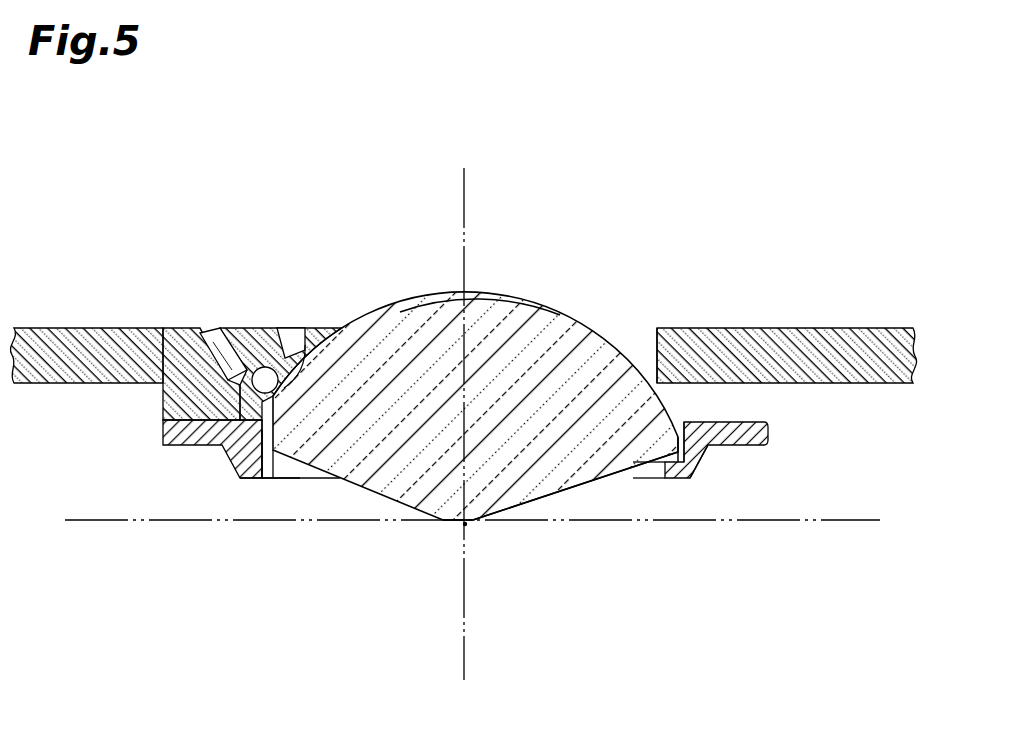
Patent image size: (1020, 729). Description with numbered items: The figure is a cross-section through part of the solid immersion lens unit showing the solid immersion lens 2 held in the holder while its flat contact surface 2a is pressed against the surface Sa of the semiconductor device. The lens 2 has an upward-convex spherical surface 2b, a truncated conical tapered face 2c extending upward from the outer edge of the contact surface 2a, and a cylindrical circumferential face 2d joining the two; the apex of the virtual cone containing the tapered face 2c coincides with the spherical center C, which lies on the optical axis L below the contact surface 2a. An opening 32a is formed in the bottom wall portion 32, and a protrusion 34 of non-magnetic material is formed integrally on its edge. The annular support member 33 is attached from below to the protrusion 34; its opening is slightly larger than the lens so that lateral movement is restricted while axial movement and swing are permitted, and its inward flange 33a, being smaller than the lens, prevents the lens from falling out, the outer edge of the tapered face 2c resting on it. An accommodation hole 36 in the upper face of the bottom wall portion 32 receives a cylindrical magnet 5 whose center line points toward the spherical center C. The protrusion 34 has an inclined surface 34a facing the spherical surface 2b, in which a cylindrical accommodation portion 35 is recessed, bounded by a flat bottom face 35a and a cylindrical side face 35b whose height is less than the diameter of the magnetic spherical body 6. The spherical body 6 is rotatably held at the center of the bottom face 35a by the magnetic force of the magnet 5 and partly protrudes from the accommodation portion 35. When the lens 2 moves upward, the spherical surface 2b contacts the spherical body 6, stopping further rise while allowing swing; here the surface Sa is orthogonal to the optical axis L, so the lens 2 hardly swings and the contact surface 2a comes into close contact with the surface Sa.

The solid immersion lens 2 is at (405, 500).
The contact surface 2a is at (473, 522).
The spherical surface 2b is at (552, 309).
The tapered face 2c is at (548, 498).
The circumferential face 2d is at (698, 455).
The magnet 5 is at (226, 350).
The spherical body 6 is at (268, 368).
The bottom wall portion 32 is at (816, 346).
The opening 32a is at (657, 352).
The support member 33 is at (770, 432).
The inward flange 33a is at (684, 479).
The protrusion 34 is at (181, 440).
The inclined surface 34a is at (265, 452).
The accommodation portion 35 is at (300, 362).
The bottom face 35a is at (236, 456).
The side face 35b is at (318, 355).
The accommodation hole 36 is at (183, 340).
The optical axis L is at (470, 197).
The surface of the semiconductor device Sa is at (849, 518).
The spherical center C is at (463, 527).